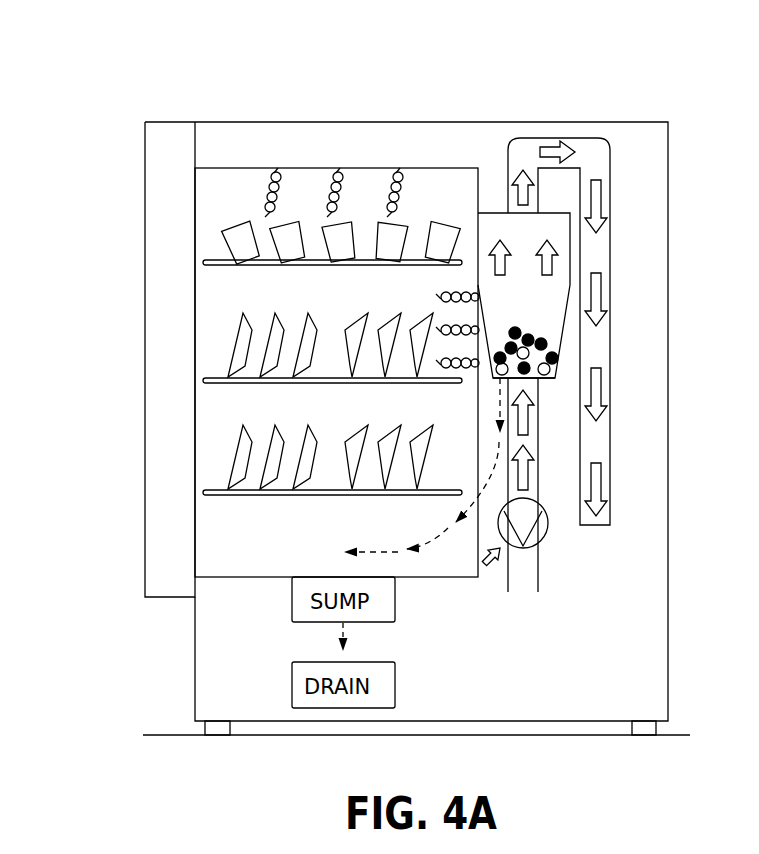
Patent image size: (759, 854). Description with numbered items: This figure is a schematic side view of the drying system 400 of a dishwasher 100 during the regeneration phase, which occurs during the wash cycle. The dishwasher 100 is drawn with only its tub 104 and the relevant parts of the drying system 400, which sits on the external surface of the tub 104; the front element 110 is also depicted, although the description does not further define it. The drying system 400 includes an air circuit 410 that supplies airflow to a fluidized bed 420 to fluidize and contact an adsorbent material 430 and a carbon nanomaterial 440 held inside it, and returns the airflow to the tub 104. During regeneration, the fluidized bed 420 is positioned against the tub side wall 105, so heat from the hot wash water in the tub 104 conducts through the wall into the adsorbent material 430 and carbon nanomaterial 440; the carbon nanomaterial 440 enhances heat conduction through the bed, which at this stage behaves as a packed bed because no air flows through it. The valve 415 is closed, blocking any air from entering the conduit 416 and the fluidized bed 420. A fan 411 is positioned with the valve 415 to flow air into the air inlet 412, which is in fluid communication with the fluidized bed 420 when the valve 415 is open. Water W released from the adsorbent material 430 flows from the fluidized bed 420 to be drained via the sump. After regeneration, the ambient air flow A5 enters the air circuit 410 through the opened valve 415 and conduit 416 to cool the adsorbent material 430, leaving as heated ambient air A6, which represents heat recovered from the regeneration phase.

The dishwasher 100 is at (170, 70).
The tub 104 is at (207, 682).
The tub side wall 105 is at (372, 166).
The door 110 is at (165, 465).
The drying system 400 is at (585, 76).
The air circuit 410 is at (650, 208).
The fan 411 is at (524, 548).
The air inlet 412 is at (508, 578).
The valve 415 is at (539, 534).
The conduit 416 is at (533, 443).
The fluidized bed 420 is at (560, 336).
The adsorbent material 430 is at (532, 337).
The carbon nanomaterial 440 is at (553, 380).
The ambient air flow A5 is at (535, 457).
The heated ambient air A6 is at (603, 204).
The water flow W is at (484, 481).